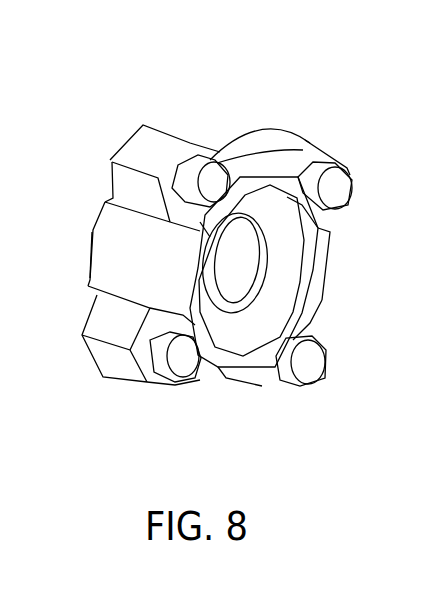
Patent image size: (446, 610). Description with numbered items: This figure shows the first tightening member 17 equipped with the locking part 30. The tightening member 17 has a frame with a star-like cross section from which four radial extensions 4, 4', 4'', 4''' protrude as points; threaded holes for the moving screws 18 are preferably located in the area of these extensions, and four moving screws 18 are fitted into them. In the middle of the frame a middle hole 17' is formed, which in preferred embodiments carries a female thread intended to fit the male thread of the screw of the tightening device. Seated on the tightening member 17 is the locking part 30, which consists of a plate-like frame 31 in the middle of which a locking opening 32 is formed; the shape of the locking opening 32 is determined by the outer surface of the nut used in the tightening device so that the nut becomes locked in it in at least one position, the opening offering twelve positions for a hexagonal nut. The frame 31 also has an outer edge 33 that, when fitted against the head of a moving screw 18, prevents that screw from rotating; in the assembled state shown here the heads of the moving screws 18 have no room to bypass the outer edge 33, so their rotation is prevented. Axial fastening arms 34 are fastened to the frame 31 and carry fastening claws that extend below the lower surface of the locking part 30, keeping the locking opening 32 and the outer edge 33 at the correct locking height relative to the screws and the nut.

The first tightening member 17 is at (147, 101).
The radial extension 4 is at (167, 149).
The plate-like frame 31 is at (251, 184).
The radial extension 4' is at (319, 142).
The locking part 30 is at (93, 214).
The axial fastening arm 34 is at (108, 267).
The radial extension 4''' is at (141, 370).
The moving screw 18 is at (182, 362).
The middle hole 17' is at (296, 272).
The outer edge 33 is at (323, 217).
The locking opening 32 is at (315, 277).
The radial extension 4'' is at (272, 392).